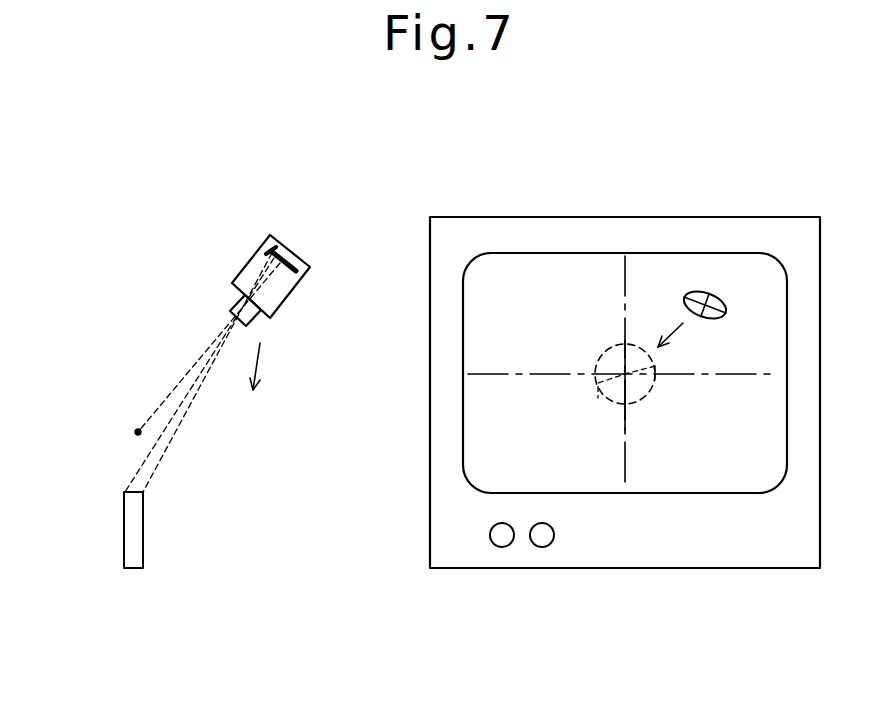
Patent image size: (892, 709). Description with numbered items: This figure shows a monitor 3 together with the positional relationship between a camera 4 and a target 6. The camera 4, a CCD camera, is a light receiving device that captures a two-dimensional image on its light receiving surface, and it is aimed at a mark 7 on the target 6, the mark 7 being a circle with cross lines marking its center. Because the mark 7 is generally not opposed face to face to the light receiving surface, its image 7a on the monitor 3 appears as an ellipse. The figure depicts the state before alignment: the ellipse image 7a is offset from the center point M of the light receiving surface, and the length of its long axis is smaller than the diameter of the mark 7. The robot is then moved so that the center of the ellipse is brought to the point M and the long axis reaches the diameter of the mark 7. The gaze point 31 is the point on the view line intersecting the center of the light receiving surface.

The camera 4 is at (248, 278).
The gaze point 31 is at (136, 430).
The target 6 is at (137, 557).
The monitor 3 is at (522, 273).
The image of the mark 7a is at (722, 297).
The mark 7 is at (590, 406).
The center point of the light receiving surface M is at (626, 375).